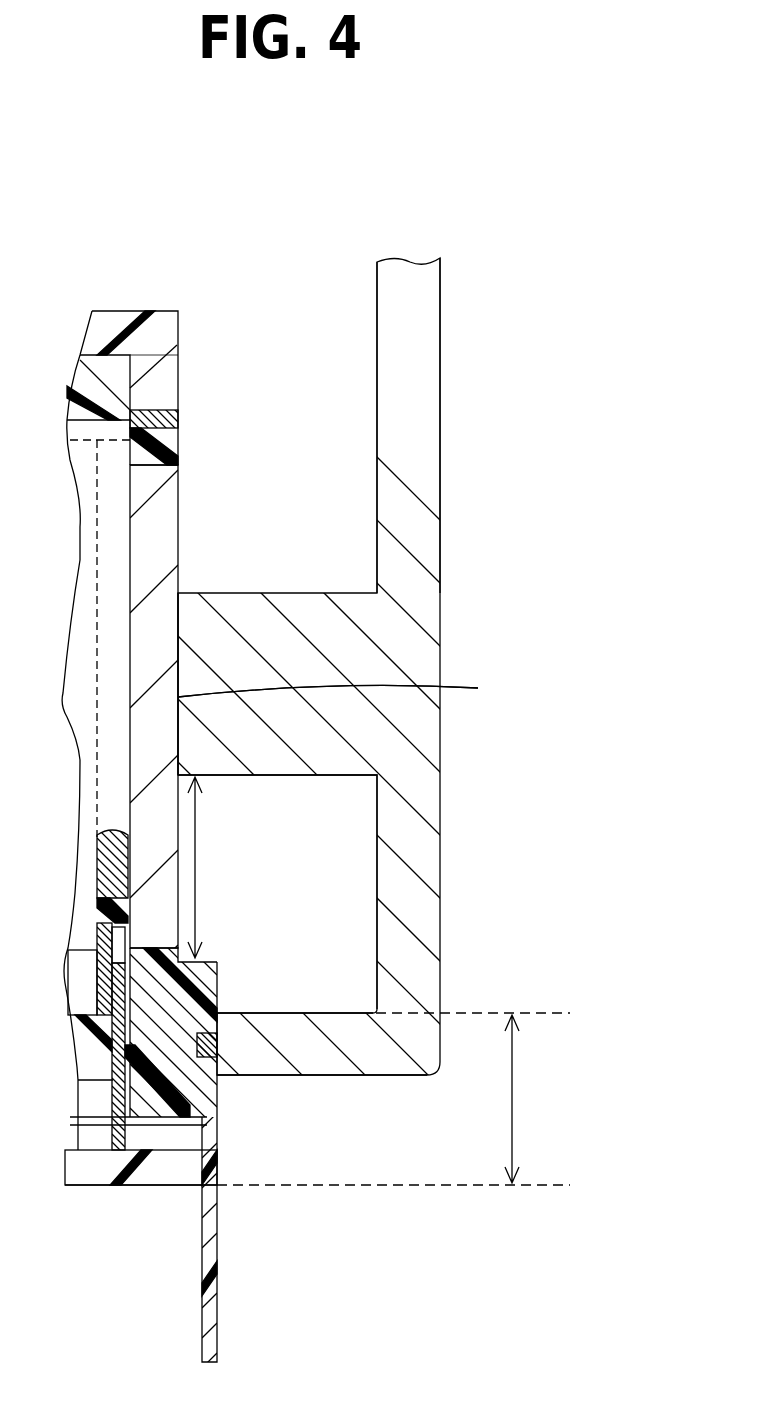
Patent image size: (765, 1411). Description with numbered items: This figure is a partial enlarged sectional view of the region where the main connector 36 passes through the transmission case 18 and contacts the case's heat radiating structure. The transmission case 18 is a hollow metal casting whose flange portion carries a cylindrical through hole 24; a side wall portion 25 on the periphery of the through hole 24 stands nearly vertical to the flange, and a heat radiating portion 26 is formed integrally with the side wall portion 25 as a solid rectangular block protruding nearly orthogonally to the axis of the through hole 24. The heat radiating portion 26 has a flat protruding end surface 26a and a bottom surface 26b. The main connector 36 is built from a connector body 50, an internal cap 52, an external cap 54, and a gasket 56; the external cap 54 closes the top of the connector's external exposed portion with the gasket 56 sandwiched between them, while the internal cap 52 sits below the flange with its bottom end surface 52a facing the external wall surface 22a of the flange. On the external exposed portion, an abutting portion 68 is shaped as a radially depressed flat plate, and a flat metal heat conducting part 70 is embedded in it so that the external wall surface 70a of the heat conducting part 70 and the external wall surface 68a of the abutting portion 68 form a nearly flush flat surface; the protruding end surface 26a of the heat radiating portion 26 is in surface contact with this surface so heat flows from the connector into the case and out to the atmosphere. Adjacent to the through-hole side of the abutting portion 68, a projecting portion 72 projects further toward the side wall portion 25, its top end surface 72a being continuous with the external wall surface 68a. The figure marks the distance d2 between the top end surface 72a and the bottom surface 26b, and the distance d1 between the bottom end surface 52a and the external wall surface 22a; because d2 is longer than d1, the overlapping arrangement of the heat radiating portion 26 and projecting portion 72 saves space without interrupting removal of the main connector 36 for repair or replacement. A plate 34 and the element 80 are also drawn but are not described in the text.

The transmission case 18 is at (385, 350).
The external wall surface of the flange portion 22a is at (347, 1010).
The through hole 24 is at (205, 1028).
The side wall portion 25 is at (415, 878).
The heat radiating portion 26 is at (313, 605).
The protruding end surface 26a is at (178, 622).
The bottom surface of the heat radiating portion 26b is at (233, 775).
The plate 34 is at (218, 1240).
The main connector 36 is at (136, 308).
The connector body 50 is at (207, 1102).
The internal cap 52 is at (185, 1160).
The bottom end surface of the internal cap 52a is at (103, 1185).
The external cap 54 is at (165, 377).
The gasket 56 is at (175, 418).
The abutting portion 68 is at (170, 440).
The external wall surface of the abutting portion 68a is at (366, 657).
The heat conducting part 70 is at (162, 513).
The external wall surface of the heat conducting part 70a is at (359, 675).
The projecting portion 72 is at (213, 980).
The top end surface of the projecting portion 72a is at (207, 947).
The bearing 80 is at (141, 351).
The distance d1 is at (393, 1099).
The distance d2 is at (209, 867).